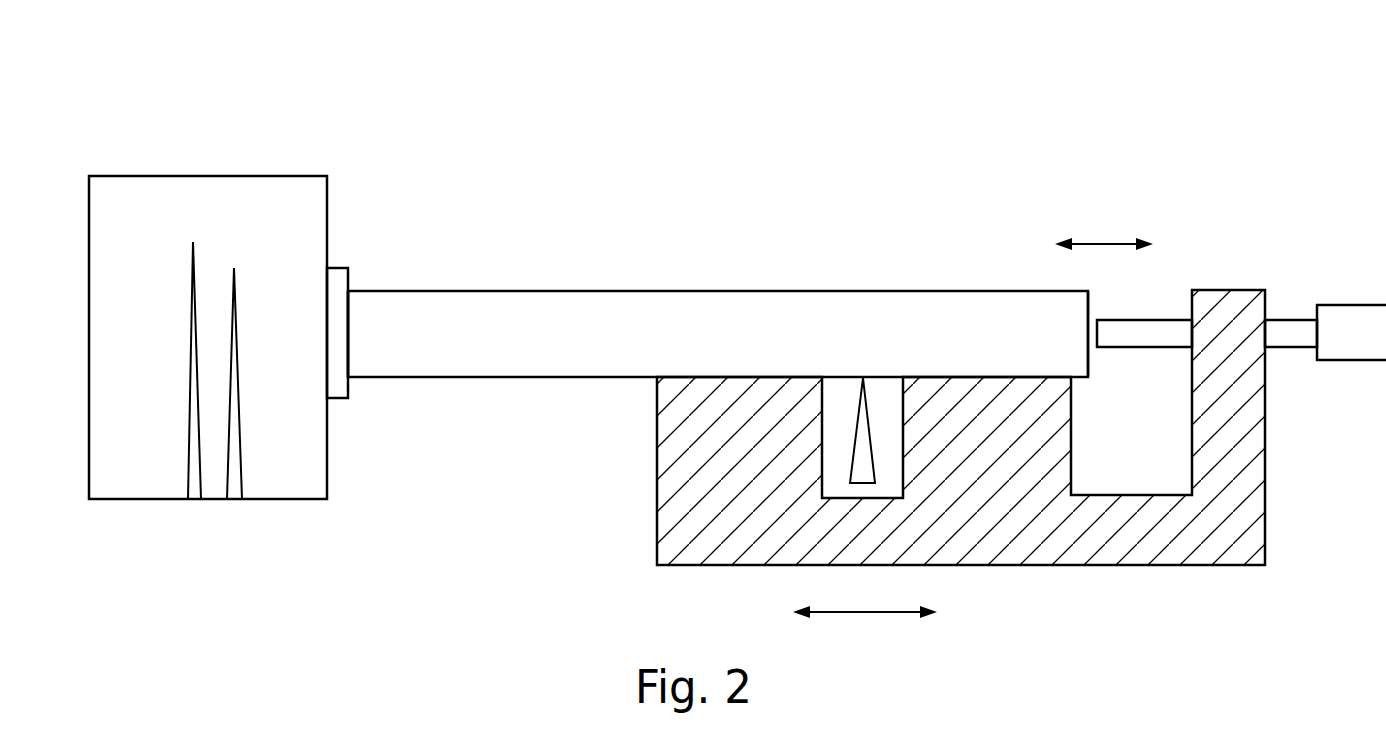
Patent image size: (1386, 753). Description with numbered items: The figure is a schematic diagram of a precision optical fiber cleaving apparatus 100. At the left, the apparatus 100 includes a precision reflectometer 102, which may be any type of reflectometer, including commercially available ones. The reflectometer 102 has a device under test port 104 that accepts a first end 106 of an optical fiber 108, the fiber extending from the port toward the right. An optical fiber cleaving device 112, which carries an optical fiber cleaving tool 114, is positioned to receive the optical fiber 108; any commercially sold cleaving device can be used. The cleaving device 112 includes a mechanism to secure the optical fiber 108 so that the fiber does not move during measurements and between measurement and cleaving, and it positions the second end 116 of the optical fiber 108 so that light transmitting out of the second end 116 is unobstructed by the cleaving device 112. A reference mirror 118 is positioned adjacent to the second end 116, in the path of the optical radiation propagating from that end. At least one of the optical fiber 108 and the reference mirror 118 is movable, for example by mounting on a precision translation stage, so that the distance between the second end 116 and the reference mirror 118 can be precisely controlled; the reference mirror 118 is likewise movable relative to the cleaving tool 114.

The precision optical fiber cleaving apparatus 100 is at (689, 92).
The precision reflectometer 102 is at (328, 478).
The device under test port 104 is at (339, 265).
The first end 106 is at (348, 347).
The optical fiber 108 is at (668, 288).
The optical fiber cleaving device 112 is at (657, 478).
The optical fiber cleaving tool 114 is at (857, 412).
The second end 116 is at (1088, 360).
The reference mirror 118 is at (1097, 318).